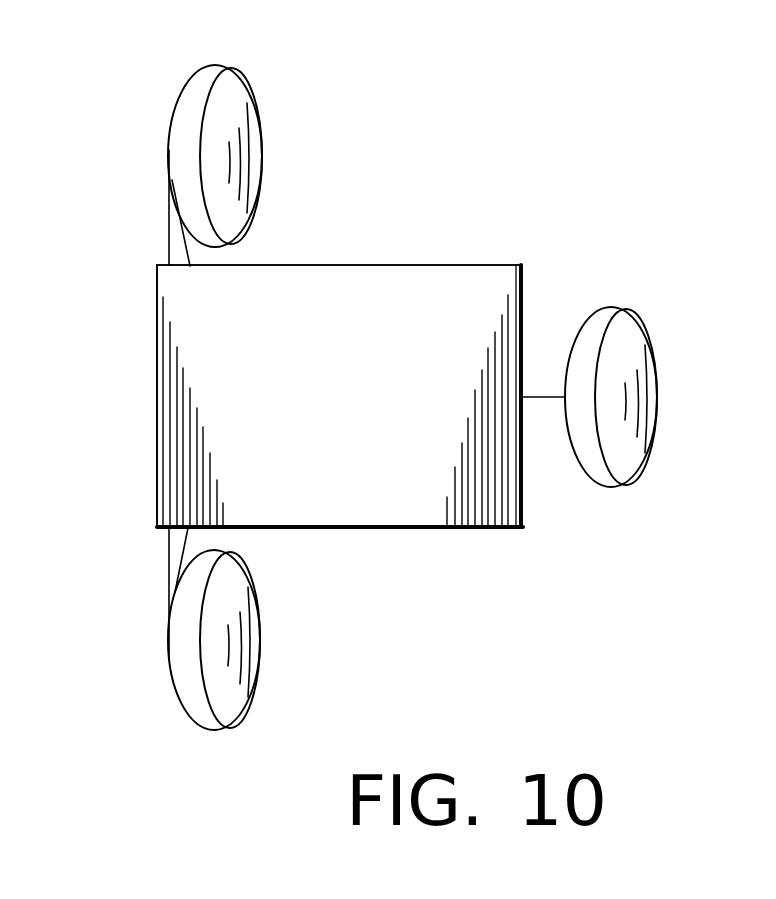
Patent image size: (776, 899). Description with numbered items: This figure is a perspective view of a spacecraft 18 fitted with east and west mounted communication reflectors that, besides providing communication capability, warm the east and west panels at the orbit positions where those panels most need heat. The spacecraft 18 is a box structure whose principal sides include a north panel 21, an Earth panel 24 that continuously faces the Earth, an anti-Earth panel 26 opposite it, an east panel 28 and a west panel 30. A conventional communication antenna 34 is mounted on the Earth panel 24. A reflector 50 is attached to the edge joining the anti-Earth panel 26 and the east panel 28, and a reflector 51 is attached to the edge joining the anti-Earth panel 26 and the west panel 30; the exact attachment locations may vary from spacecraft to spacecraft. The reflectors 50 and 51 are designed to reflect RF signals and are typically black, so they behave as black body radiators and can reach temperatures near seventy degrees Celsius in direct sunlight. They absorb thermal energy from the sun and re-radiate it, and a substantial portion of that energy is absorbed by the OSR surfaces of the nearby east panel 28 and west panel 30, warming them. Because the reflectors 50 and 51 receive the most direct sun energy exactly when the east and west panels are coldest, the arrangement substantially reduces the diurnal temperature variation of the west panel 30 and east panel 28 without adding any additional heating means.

The spacecraft 18 is at (550, 210).
The north panel 21 is at (430, 293).
The Earth panel 24 is at (527, 285).
The anti-Earth panel 26 is at (157, 402).
The east panel 28 is at (340, 531).
The west panel 30 is at (340, 263).
The communication antenna 34 is at (645, 470).
The reflector 50 is at (190, 708).
The reflector 51 is at (176, 110).